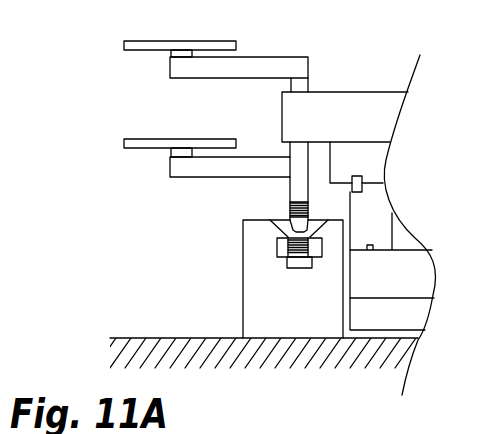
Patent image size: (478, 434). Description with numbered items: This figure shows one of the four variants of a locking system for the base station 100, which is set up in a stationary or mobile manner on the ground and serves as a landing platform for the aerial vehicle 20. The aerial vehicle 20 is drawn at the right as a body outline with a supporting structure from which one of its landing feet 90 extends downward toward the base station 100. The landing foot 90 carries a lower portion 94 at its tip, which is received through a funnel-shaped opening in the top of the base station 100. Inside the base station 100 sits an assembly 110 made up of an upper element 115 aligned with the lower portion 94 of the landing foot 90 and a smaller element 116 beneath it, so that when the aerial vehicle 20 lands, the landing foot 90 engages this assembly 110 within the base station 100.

The aerial vehicle 20 is at (369, 88).
The landing foot 90 is at (247, 156).
The probe contact portion 94 is at (290, 213).
The base station 100 is at (229, 276).
The receptacle assembly 110 is at (248, 285).
The receptacle contact 115 is at (277, 250).
The receptacle base 116 is at (277, 257).